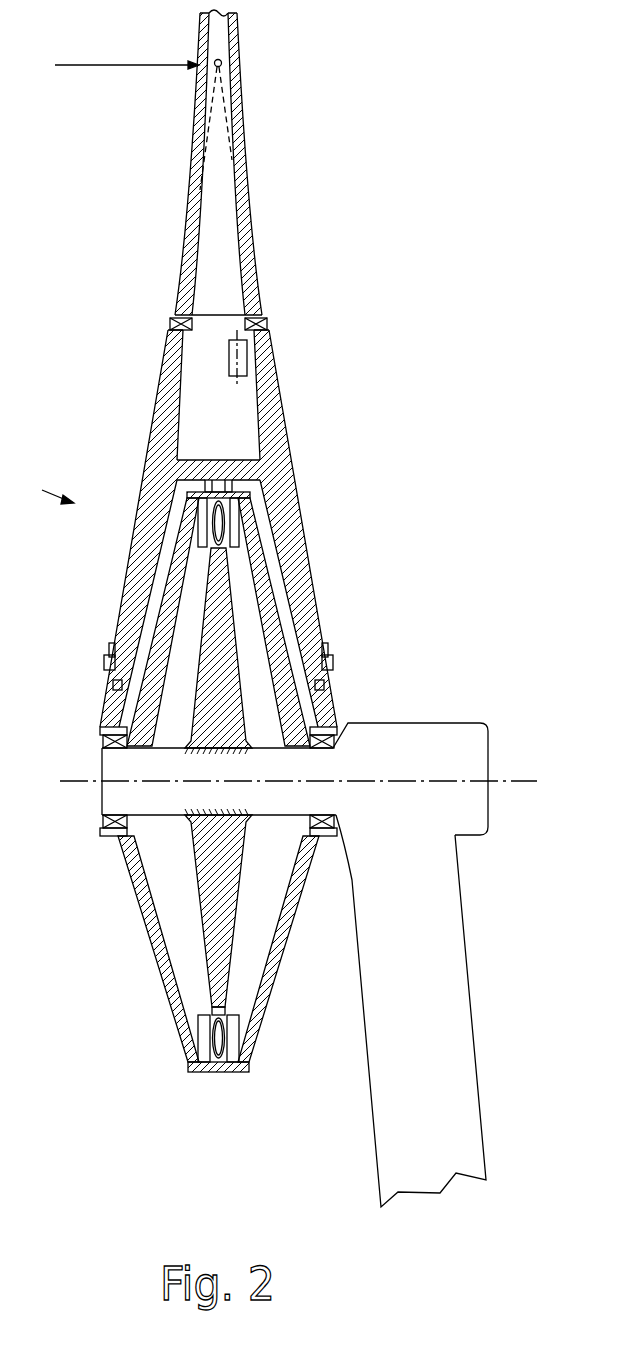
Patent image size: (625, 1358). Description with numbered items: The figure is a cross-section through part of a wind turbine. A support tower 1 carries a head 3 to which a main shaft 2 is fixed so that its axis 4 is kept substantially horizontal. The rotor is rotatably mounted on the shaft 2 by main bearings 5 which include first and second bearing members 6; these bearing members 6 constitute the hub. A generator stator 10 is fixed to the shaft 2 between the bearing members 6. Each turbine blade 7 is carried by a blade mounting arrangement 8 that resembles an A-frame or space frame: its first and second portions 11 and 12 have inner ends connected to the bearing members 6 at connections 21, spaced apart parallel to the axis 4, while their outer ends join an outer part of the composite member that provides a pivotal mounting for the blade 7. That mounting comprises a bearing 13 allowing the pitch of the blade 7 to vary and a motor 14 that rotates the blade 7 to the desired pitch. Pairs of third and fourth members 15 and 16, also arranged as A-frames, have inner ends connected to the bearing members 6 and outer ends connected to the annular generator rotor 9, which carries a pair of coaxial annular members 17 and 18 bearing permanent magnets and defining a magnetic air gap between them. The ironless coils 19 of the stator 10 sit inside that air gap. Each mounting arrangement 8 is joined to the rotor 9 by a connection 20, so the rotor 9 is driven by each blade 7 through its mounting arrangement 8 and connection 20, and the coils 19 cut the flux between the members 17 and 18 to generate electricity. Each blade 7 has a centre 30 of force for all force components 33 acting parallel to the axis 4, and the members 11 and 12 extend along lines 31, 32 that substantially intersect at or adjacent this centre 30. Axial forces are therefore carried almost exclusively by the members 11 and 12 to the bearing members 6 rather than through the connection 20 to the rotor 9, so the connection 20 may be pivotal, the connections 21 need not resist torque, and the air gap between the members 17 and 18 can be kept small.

The support tower 1 is at (451, 1032).
The main shaft 2 is at (110, 792).
The head 3 is at (447, 736).
The axis 4 is at (65, 780).
The main bearings 5 is at (336, 737).
The bearing members 6 is at (108, 727).
The turbine blade 7 is at (242, 172).
The turbine blade mounting arrangement 8 is at (141, 482).
The generator rotor 9 is at (243, 510).
The generator stator 10 is at (231, 626).
The first portion 11 is at (137, 568).
The second portion 12 is at (290, 543).
The bearing 13 is at (170, 323).
The motor 14 is at (240, 363).
The third member 15 is at (162, 605).
The fourth member 16 is at (285, 628).
The annular member 17 is at (202, 1022).
The annular member 18 is at (238, 1022).
The coils 19 is at (220, 1062).
The connection 20 is at (237, 489).
The connections 21 is at (108, 659).
The centre of force 30 is at (225, 62).
The line 31 is at (212, 108).
The line 32 is at (224, 94).
The force components 33 is at (93, 65).